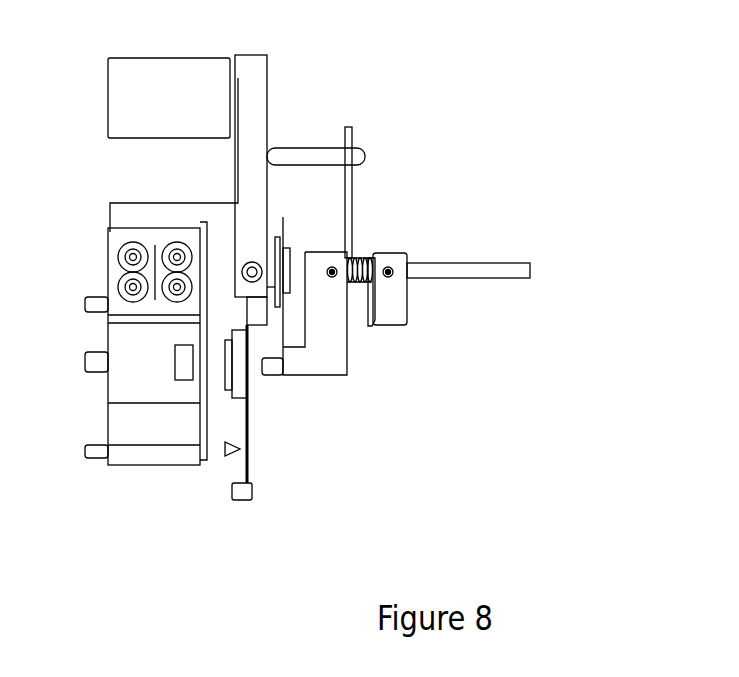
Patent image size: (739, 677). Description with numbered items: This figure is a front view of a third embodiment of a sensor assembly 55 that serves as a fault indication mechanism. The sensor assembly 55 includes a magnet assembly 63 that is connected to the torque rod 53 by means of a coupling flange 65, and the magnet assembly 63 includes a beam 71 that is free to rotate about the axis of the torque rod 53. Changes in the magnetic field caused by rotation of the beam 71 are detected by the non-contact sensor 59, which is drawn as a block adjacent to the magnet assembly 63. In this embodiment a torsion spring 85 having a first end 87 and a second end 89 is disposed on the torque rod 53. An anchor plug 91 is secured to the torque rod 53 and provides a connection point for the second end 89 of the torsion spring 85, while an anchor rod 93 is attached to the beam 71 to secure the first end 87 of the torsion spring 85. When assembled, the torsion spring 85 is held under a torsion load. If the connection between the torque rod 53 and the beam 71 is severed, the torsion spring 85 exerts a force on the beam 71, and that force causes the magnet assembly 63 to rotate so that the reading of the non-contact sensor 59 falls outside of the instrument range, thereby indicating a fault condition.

The torque rod 53 is at (492, 263).
The sensor assembly 55 is at (528, 73).
The non-contact sensor 59 is at (152, 58).
The magnet assembly 63 is at (270, 53).
The coupling flange 65 is at (327, 375).
The beam 71 is at (237, 163).
The torsion spring 85 is at (357, 255).
The first end 87 is at (352, 192).
The second end 89 is at (412, 320).
The anchor plug 91 is at (393, 323).
The anchor rod 93 is at (295, 148).